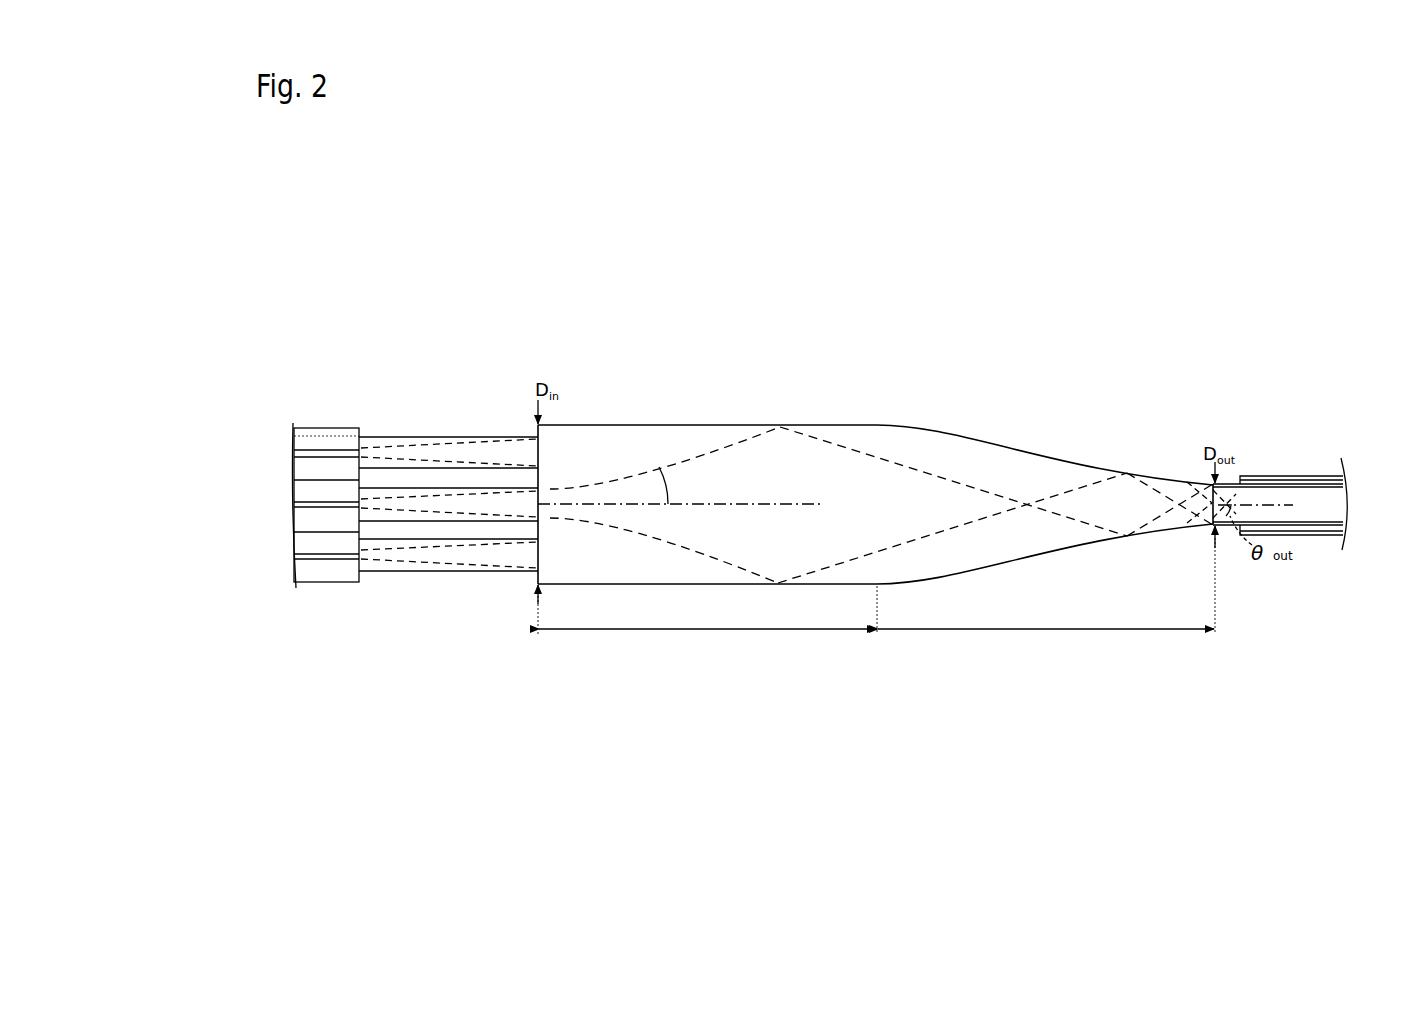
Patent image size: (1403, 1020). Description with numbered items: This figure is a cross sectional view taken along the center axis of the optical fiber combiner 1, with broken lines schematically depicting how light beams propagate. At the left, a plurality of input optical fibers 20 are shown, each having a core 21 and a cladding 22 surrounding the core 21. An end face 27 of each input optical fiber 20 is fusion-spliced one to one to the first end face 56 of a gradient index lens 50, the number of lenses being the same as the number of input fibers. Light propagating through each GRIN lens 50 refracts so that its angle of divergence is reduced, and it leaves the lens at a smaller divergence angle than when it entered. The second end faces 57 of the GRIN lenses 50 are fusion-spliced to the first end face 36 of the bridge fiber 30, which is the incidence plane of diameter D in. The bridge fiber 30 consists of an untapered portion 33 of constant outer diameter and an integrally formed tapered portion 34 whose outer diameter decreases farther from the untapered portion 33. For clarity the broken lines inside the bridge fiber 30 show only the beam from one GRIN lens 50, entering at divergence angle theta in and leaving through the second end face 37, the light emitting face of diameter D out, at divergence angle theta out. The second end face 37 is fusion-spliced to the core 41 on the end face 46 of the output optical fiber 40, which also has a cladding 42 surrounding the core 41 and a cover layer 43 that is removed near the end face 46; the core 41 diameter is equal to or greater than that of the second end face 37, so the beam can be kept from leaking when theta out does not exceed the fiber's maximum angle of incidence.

The optical fiber combiner 1 is at (1087, 300).
The input optical fiber 20 is at (286, 471).
The core 21 is at (296, 454).
The cladding 22 is at (296, 441).
The end face 27 is at (371, 435).
The bridge fiber 30 is at (830, 432).
The untapered portion 33 is at (707, 641).
The tapered portion 34 is at (1046, 641).
The first end face 36 is at (535, 560).
The second end face 37 is at (1219, 532).
The output optical fiber 40 is at (1280, 479).
The core 41 is at (1243, 492).
The cladding 42 is at (1256, 483).
The cover layer 43 is at (1284, 476).
The end face 46 is at (1210, 498).
The gradient index (GRIN) lens 50 is at (445, 436).
The first end face 56 is at (358, 576).
The second end face 57 is at (542, 445).